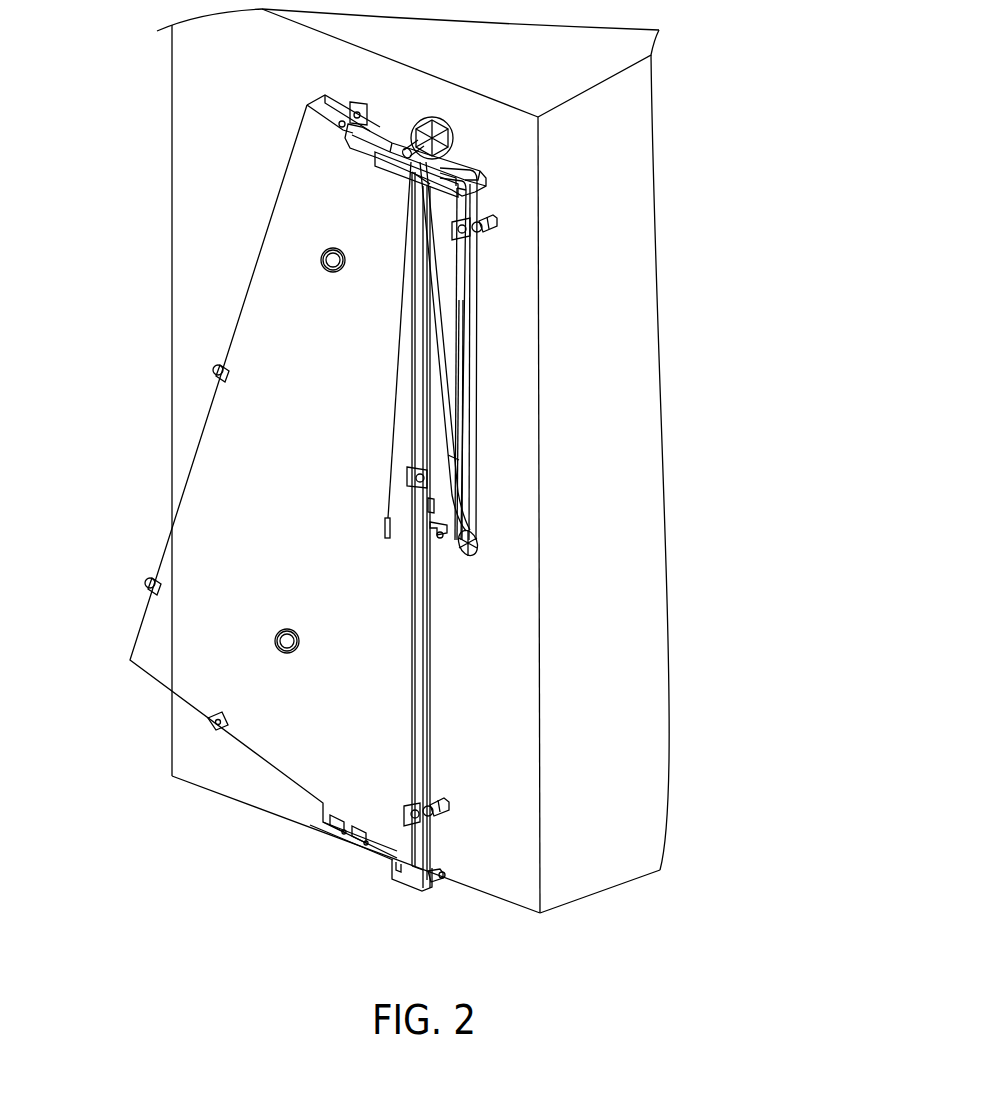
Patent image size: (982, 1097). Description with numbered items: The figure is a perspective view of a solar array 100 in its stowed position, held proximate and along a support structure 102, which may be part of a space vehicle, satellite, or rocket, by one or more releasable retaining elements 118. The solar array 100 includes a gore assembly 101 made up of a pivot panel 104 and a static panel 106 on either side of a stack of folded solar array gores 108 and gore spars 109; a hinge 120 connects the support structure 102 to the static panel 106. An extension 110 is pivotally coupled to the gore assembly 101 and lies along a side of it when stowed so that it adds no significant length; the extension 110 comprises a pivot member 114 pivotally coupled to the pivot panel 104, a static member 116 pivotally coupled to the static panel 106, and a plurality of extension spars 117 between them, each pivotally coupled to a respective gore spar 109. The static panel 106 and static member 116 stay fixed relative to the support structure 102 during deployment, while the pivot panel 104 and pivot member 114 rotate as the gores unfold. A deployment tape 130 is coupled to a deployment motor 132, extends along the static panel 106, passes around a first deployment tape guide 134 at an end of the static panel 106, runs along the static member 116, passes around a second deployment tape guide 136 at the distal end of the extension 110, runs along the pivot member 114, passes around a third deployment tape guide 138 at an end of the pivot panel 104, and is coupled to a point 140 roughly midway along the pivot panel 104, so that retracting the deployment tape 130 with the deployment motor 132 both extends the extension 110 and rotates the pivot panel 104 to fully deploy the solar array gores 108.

The solar array 100 is at (102, 409).
The gore assembly 101 is at (144, 496).
The support structure 102 is at (168, 205).
The pivot panel 104 is at (148, 642).
The static panel 106 is at (428, 715).
The solar array gores 108 is at (379, 132).
The gore spars 109 is at (424, 627).
The extension 110 is at (498, 386).
The pivot member 114 is at (448, 270).
The static member 116 is at (468, 312).
The extension spars 117 is at (463, 347).
The releasable retaining elements 118 is at (213, 366).
The hinge 120 is at (339, 851).
The deployment tape 130 is at (442, 393).
The deployment motor 132 is at (438, 881).
The first deployment tape guide 134 is at (476, 143).
The second deployment tape guide 136 is at (486, 545).
The third deployment tape guide 138 is at (399, 181).
The point 140 is at (371, 525).